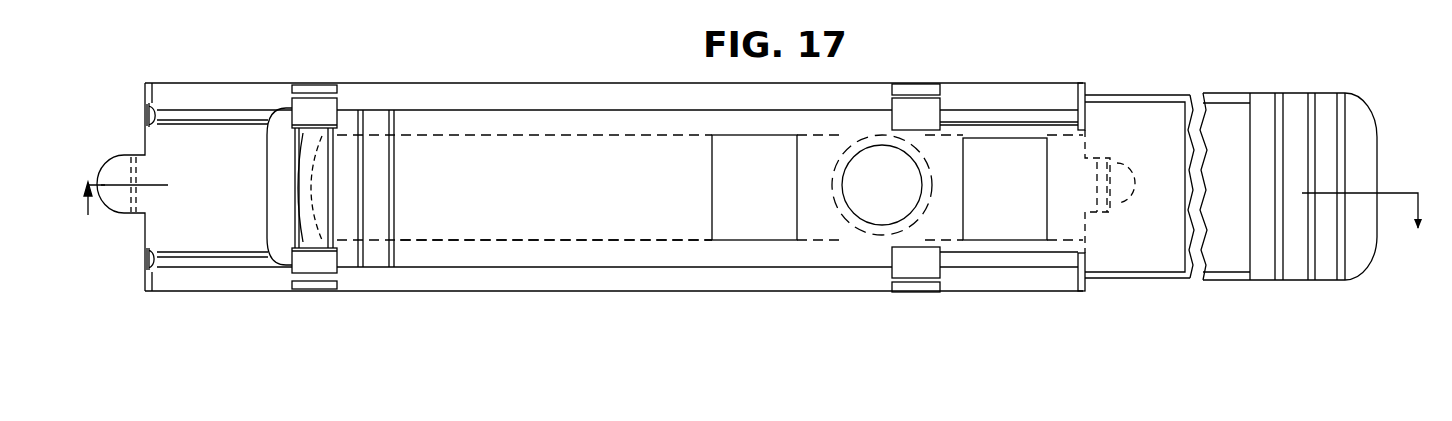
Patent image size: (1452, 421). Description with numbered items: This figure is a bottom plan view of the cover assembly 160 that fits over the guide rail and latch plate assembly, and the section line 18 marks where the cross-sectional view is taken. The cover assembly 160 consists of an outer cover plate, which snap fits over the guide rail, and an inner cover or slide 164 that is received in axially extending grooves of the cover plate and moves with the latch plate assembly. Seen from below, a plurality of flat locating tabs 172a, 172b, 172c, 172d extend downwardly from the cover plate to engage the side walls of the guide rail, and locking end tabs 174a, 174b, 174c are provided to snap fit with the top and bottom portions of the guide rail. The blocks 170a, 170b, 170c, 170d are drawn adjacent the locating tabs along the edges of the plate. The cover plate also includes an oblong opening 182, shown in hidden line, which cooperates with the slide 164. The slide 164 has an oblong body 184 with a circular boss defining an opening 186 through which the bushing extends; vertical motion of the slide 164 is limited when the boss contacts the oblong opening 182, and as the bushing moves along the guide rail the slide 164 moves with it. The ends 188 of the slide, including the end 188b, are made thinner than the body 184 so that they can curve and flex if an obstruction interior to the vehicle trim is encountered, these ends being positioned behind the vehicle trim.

The section line 18- 18 is at (755, 231).
The cover assembly 160 is at (140, 101).
The slide 164 is at (1235, 248).
The mounting block 170a is at (927, 110).
The mounting block 170b is at (922, 263).
The mounting block 170c is at (326, 112).
The mounting block 170d is at (322, 262).
The flat locating tab 172a is at (907, 84).
The flat locating tab 172b is at (908, 297).
The flat locating tab 172c is at (303, 85).
The flat locating tab 172d is at (327, 289).
The locking end tab 174a is at (1085, 95).
The locking end tab 174b is at (1088, 283).
The locking end tab 174c is at (112, 187).
The oblong opening 182 is at (516, 240).
The oblong body 184 is at (1160, 283).
The opening 186 is at (880, 215).
The ends 188 is at (1313, 258).
The end 188b is at (276, 185).